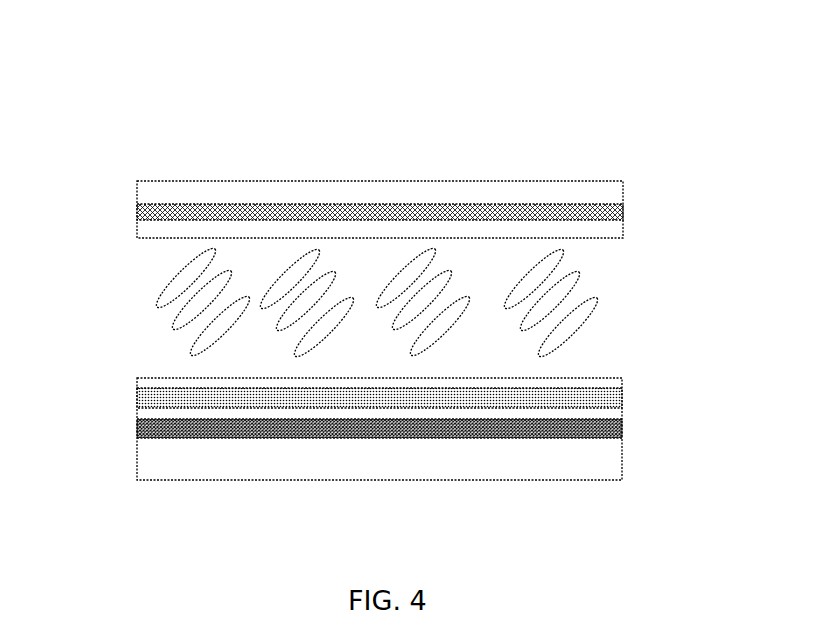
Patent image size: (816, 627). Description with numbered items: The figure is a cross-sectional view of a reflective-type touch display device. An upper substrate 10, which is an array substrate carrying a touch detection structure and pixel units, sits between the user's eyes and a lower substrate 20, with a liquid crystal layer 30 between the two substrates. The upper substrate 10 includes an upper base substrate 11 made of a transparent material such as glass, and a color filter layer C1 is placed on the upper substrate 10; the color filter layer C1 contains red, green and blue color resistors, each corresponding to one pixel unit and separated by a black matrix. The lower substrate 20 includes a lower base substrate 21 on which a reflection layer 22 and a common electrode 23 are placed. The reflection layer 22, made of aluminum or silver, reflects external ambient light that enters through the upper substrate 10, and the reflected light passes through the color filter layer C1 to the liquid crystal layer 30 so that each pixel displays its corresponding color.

The upper substrate 10 is at (135, 182).
The upper base substrate 11 is at (338, 193).
The color filter layer C1 is at (573, 205).
The liquid crystal layer 30 is at (136, 257).
The lower substrate 20 is at (135, 378).
The lower base substrate 21 is at (540, 458).
The reflection layer 22 is at (580, 437).
The common electrode 23 is at (618, 397).